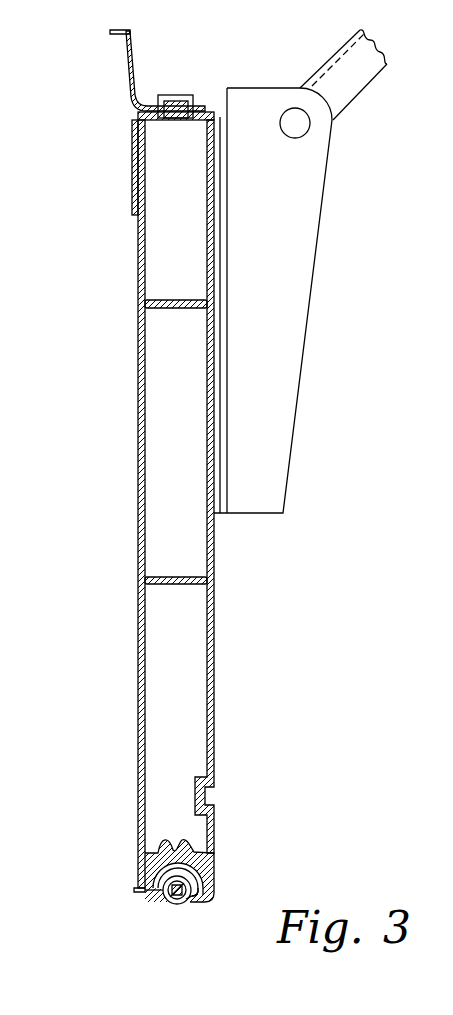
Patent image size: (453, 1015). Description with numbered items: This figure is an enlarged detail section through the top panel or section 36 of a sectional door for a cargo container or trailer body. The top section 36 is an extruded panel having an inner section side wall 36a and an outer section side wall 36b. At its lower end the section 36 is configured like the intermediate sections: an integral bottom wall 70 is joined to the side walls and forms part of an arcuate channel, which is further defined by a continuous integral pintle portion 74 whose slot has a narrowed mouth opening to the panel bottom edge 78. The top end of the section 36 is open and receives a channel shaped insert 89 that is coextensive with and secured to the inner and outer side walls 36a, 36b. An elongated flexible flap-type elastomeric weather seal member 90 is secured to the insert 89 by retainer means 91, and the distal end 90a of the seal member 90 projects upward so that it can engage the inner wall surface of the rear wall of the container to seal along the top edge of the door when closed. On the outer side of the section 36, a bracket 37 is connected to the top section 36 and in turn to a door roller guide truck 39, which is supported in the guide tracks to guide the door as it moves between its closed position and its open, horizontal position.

The top section 36 is at (186, 502).
The inner section side wall 36a is at (138, 470).
The outer section side wall 36b is at (213, 552).
The bracket 37 is at (295, 233).
The door roller guide truck 39 is at (372, 100).
The bottom wall 70 is at (196, 890).
The pintle portion 74 is at (168, 905).
The panel bottom edge 78 is at (195, 902).
The channel shaped insert 89 is at (133, 163).
The weather seal member 90 is at (126, 70).
The distal end 90a is at (89, 48).
The retainer means 91 is at (178, 95).